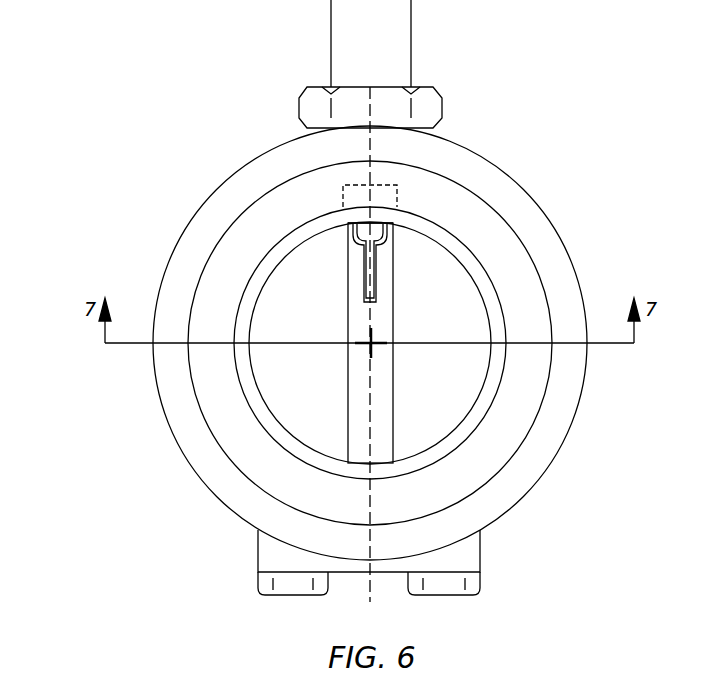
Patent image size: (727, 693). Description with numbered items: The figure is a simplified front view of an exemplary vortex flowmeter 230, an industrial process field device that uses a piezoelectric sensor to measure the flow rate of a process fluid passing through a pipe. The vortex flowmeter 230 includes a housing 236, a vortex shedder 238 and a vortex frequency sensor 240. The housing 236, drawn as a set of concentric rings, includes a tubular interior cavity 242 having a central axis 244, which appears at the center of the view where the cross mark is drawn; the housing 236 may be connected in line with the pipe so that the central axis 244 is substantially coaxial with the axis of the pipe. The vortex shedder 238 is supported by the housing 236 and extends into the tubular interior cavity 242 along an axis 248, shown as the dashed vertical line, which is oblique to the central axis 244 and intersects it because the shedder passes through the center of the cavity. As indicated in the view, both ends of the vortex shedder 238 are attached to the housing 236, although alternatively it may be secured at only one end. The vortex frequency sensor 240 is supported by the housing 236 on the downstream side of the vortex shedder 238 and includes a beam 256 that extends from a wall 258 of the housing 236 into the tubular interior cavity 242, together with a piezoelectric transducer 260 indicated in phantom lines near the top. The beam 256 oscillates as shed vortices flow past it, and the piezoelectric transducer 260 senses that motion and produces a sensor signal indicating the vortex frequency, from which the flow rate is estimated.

The vortex flowmeter 230 is at (113, 70).
The housing 236 is at (200, 228).
The vortex frequency sensor 240 is at (302, 192).
The interior cavity 242 is at (285, 405).
The vortex shedder 238 is at (353, 383).
The wall 258 is at (419, 228).
The beam 256 is at (366, 282).
The piezoelectric transducer 260 is at (392, 193).
The axis 248 is at (372, 418).
The central axis 244 is at (373, 334).